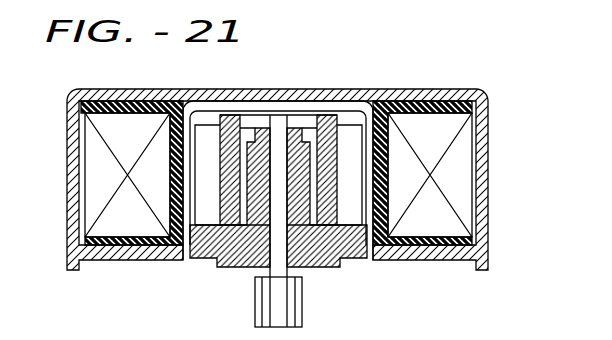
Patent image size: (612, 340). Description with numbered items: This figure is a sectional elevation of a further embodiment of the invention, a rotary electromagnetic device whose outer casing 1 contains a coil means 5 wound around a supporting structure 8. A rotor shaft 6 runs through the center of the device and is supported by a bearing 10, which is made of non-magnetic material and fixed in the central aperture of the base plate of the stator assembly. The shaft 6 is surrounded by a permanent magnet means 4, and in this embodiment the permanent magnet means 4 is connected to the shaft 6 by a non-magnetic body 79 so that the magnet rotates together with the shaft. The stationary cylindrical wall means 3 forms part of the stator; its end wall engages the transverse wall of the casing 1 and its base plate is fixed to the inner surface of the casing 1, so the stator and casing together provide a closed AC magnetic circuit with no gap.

The casing 1 is at (483, 128).
The cylindrical wall means 3 is at (367, 103).
The permanent magnet means 4 is at (348, 140).
The coil means 5 is at (457, 178).
The rotor shaft 6 is at (281, 118).
The supporting structure 8 is at (420, 106).
The bearing 10 is at (322, 255).
The non-magnetic body 79 is at (227, 113).